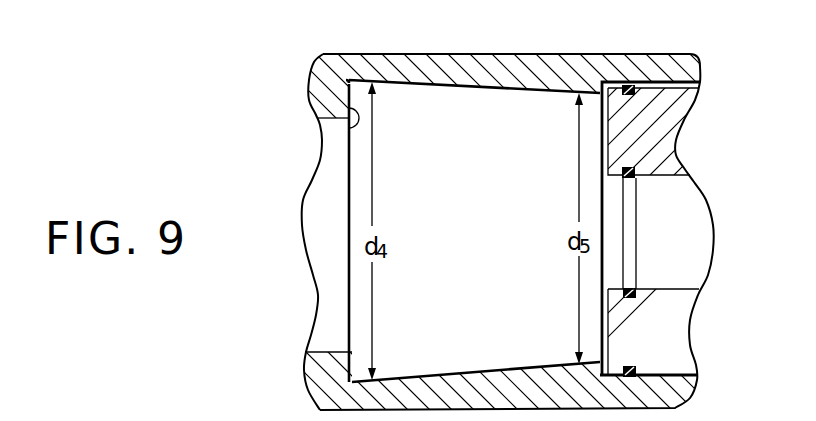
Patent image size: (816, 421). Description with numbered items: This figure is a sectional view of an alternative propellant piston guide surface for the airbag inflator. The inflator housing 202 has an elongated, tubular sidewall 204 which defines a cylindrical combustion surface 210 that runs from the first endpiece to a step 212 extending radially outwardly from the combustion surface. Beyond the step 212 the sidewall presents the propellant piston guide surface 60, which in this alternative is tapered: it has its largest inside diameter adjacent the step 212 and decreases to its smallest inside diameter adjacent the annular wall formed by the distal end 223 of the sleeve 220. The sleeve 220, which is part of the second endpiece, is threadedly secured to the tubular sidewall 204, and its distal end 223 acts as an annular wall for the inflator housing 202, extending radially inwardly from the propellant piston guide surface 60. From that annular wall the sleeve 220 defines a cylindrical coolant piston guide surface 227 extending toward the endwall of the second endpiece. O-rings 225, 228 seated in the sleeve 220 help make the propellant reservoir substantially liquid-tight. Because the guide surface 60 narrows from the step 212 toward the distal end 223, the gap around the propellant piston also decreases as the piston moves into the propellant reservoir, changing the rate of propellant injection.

The inflator housing 202 is at (533, 52).
The tubular sidewall 204 is at (502, 210).
The propellant piston guide surface 60 is at (445, 86).
The step 212 is at (347, 127).
The combustion surface 210 is at (309, 353).
The distal end of sleeve 223 is at (610, 126).
The o-ring 228 is at (632, 228).
The coolant piston guide surface 227 is at (665, 290).
The sleeve 220 is at (667, 352).
The o-ring 225 is at (640, 385).